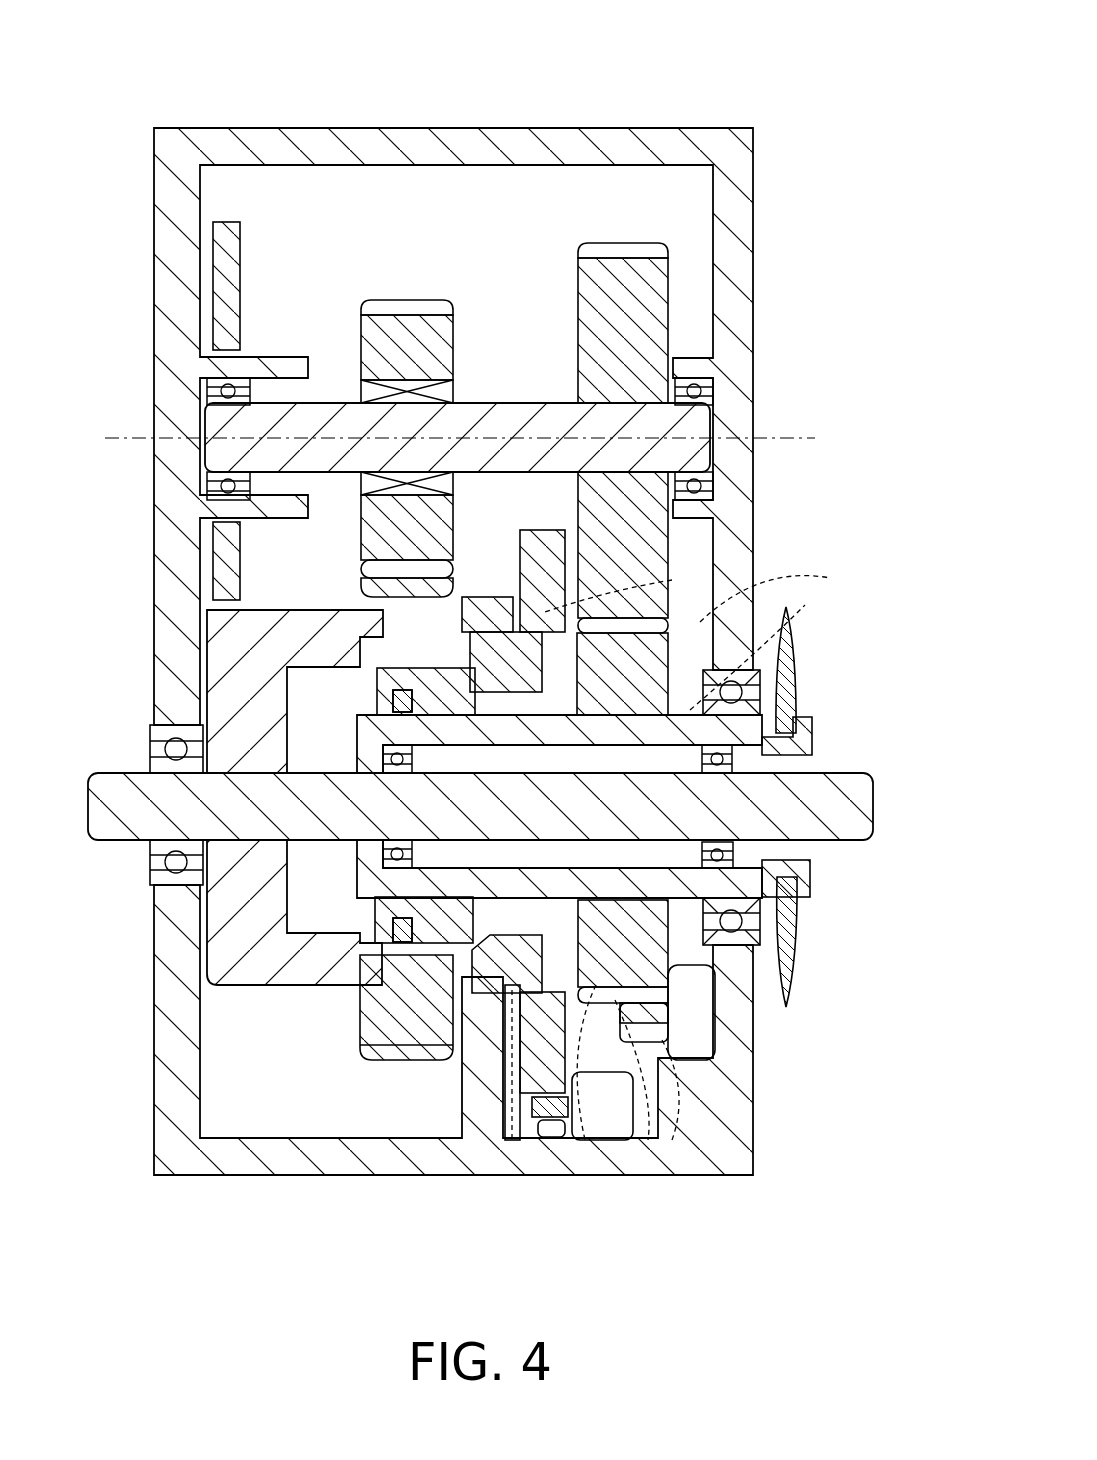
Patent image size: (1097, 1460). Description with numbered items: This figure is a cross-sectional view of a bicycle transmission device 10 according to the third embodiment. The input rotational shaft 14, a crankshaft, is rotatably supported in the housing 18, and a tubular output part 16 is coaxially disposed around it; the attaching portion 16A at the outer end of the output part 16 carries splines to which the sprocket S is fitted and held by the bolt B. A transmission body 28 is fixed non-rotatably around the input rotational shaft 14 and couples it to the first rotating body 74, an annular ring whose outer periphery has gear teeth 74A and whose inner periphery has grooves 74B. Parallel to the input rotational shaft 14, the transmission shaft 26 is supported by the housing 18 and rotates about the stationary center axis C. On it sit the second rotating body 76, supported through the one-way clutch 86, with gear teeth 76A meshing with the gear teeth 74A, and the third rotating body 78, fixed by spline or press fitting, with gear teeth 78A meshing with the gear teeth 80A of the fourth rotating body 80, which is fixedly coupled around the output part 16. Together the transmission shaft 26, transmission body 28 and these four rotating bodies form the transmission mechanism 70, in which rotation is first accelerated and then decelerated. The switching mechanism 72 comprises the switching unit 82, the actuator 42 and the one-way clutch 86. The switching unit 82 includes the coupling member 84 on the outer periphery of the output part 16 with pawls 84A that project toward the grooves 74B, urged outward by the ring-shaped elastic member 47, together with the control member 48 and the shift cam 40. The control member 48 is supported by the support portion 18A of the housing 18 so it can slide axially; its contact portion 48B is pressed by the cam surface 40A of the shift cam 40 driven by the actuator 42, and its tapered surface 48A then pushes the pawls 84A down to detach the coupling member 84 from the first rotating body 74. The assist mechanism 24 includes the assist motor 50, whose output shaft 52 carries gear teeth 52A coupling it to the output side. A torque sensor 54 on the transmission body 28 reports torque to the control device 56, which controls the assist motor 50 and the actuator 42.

The bicycle transmission device 10 is at (723, 70).
The input rotational shaft 14 is at (866, 773).
The output part 16 is at (762, 692).
The attaching portion 16A is at (795, 738).
The housing 18 is at (755, 196).
The support portion 18A is at (470, 597).
The assist mechanism 24 is at (775, 1143).
The transmission shaft 26 is at (548, 402).
The transmission body 28 is at (322, 608).
The shift cam 40 is at (540, 530).
The cam surface 40A is at (510, 1142).
The actuator 42 is at (648, 1112).
The elastic member 47 is at (375, 730).
The control member 48 is at (552, 982).
The tapered surface 48A is at (482, 936).
The contact portion 48B is at (765, 590).
The assist motor 50 is at (718, 1033).
The output shaft 52 is at (620, 1142).
The gear teeth 52A is at (700, 1062).
The torque sensor 54 is at (270, 598).
The control device 56 is at (242, 243).
The transmission mechanism 70 is at (491, 242).
The switching mechanism 72 is at (542, 1232).
The first rotating body 74 is at (360, 1020).
The gear teeth 74A is at (405, 1062).
The grooves 74B is at (392, 925).
The second rotating body 76 is at (455, 327).
The gear teeth 76A is at (413, 298).
The third rotating body 78 is at (576, 281).
The gear teeth 78A is at (625, 242).
The fourth rotating body 80 is at (740, 604).
The gear teeth 80A is at (580, 1138).
The switching unit 82 is at (491, 524).
The coupling member 84 is at (392, 700).
The pawls 84A is at (410, 676).
The one-way clutch 86 is at (360, 396).
The bolt B is at (812, 880).
The sprocket S is at (798, 930).
The center axis C is at (786, 438).